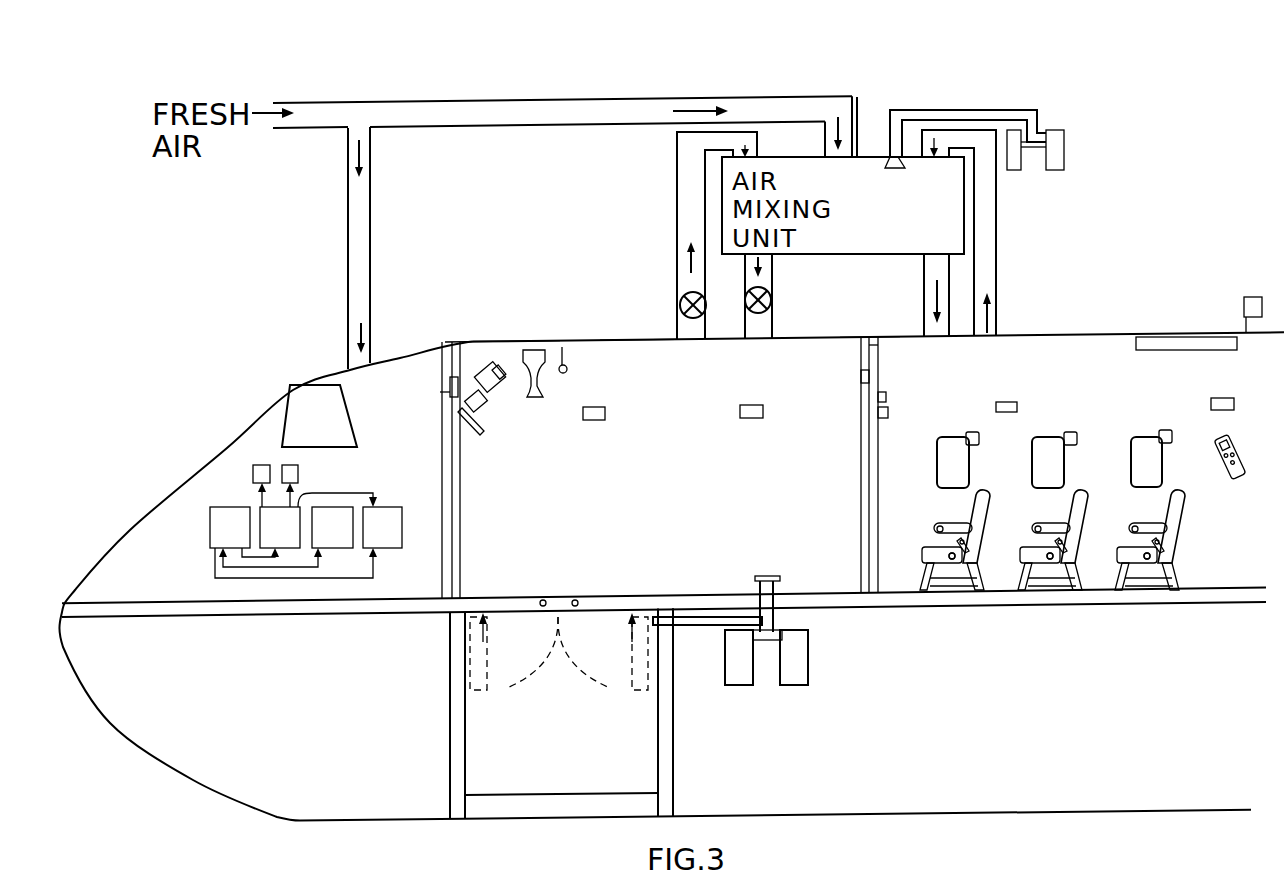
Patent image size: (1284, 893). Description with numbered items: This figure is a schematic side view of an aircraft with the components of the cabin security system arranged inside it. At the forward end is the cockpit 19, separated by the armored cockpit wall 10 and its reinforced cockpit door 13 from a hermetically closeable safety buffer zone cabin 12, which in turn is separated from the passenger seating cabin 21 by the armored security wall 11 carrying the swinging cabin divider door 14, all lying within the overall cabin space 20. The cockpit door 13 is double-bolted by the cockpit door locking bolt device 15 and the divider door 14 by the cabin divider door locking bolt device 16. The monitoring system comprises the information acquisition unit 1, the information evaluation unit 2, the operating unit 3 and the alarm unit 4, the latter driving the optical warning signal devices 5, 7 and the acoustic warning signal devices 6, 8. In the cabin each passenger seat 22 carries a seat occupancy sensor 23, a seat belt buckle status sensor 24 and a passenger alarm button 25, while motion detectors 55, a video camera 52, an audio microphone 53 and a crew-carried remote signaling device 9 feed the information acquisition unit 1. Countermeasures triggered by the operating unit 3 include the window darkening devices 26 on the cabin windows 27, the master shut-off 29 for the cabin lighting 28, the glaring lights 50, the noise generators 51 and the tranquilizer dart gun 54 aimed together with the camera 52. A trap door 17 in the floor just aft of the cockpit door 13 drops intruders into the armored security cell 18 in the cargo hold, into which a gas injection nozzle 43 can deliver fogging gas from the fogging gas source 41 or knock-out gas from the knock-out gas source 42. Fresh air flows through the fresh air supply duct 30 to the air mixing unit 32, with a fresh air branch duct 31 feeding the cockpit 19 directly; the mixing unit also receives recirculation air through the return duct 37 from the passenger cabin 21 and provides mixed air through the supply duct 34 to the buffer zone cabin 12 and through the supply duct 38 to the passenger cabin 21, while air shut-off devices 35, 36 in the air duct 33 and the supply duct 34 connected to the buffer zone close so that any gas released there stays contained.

The information acquisition unit 1 is at (323, 542).
The information evaluation unit 2 is at (221, 542).
The operating unit 3 is at (373, 542).
The alarm unit 4 is at (271, 542).
The optical warning signal device 5 is at (889, 412).
The acoustic warning signal device 6 is at (886, 394).
The optical warning signal device 7 is at (253, 472).
The acoustic warning signal device 8 is at (292, 465).
The portable remote signaling device 9 is at (1245, 470).
The cockpit wall 10 is at (445, 347).
The security wall 11 is at (870, 338).
The safety buffer zone cabin 12 is at (632, 353).
The cockpit door 13 is at (452, 457).
The cabin divider door 14 is at (859, 420).
The cockpit door locking bolt device 15 is at (443, 386).
The cabin divider door locking bolt device 16 is at (859, 362).
The trap door 17 is at (507, 609).
The security cell 18 is at (535, 787).
The cockpit 19 is at (350, 372).
The overall cabin space 20 is at (1026, 309).
The passenger seating cabin 21 is at (1097, 350).
The passenger seat 22 is at (1174, 520).
The seat occupancy sensor 23 is at (572, 602).
The seat belt buckle status sensor 24 is at (1051, 553).
The passenger alarm button 25 is at (1147, 552).
The window darkening device 26 is at (1166, 430).
The cabin window 27 is at (1141, 447).
The cabin lighting 28 is at (1167, 340).
The master shut-off 29 is at (1253, 297).
The fresh air supply duct 30 is at (281, 128).
The fresh air branch duct 31 is at (348, 199).
The air mixing unit 32 is at (865, 140).
The air duct 33 is at (678, 168).
The mixed air supply duct 34 is at (773, 323).
The air shut-off device 35 is at (686, 316).
The air shut-off device 36 is at (748, 316).
The recirculation air return duct 37 is at (993, 220).
The mixed air supply duct 38 is at (963, 341).
The fogging gas source 41 is at (1017, 170).
The knock-out gas source 42 is at (1064, 148).
The gas injection nozzle 43 is at (888, 157).
The blinding light 50 is at (496, 362).
The noise generator 51 is at (530, 349).
The video camera 52 is at (470, 372).
The audio microphone 53 is at (566, 352).
The tranquilizer dart gun 54 is at (484, 428).
The motion detector 55 is at (605, 418).